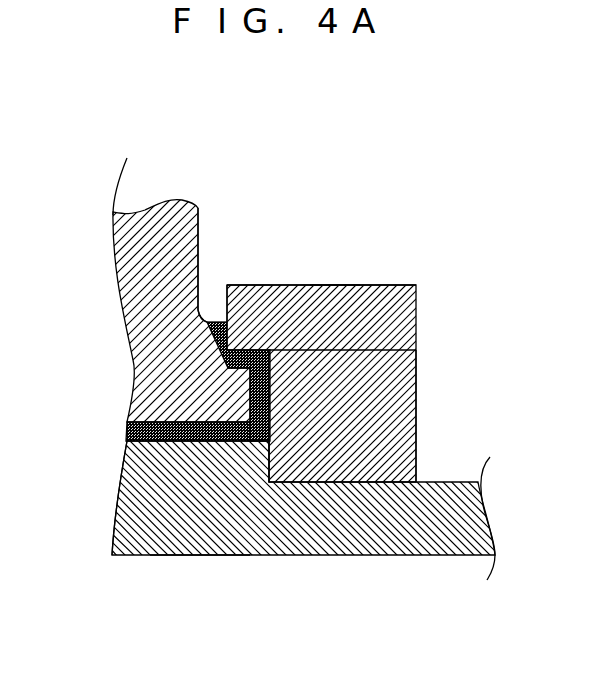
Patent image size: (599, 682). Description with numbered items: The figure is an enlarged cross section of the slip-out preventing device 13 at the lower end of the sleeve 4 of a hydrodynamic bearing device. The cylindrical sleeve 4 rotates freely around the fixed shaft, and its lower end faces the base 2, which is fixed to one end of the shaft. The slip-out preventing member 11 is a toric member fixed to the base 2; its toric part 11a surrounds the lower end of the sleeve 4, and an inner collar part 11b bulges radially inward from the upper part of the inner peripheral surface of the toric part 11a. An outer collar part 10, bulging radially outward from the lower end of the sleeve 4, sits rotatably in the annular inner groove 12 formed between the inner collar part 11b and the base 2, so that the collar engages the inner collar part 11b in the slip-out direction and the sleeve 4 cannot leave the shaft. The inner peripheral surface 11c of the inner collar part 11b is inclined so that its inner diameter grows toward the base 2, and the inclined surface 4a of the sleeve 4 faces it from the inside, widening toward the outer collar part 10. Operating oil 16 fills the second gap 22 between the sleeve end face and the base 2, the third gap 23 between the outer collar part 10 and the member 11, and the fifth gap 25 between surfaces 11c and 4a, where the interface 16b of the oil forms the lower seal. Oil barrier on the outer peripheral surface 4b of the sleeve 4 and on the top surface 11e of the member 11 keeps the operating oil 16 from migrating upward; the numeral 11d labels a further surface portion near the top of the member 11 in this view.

The base 2 is at (424, 526).
The sleeve 4 is at (201, 203).
The inclined surface 4a is at (218, 320).
The outer peripheral surface of the cylindrical part of the sleeve 4b is at (209, 318).
The outer collar part 10 is at (238, 442).
The slip-out preventing member 11 is at (428, 292).
The toric part 11a is at (392, 432).
The inner collar part 11b is at (325, 286).
The inner peripheral surface 11c is at (223, 286).
The corner portion of second member 11d is at (255, 286).
The top surface of the slip-out preventing member 11e is at (284, 286).
The inner groove 12 is at (254, 444).
The slip-out preventing device 13 is at (284, 354).
The operating oil 16 is at (130, 432).
The interface 16b is at (203, 324).
The second gap 22 is at (173, 443).
The third gap 23 is at (288, 378).
The fifth gap 25 is at (340, 286).